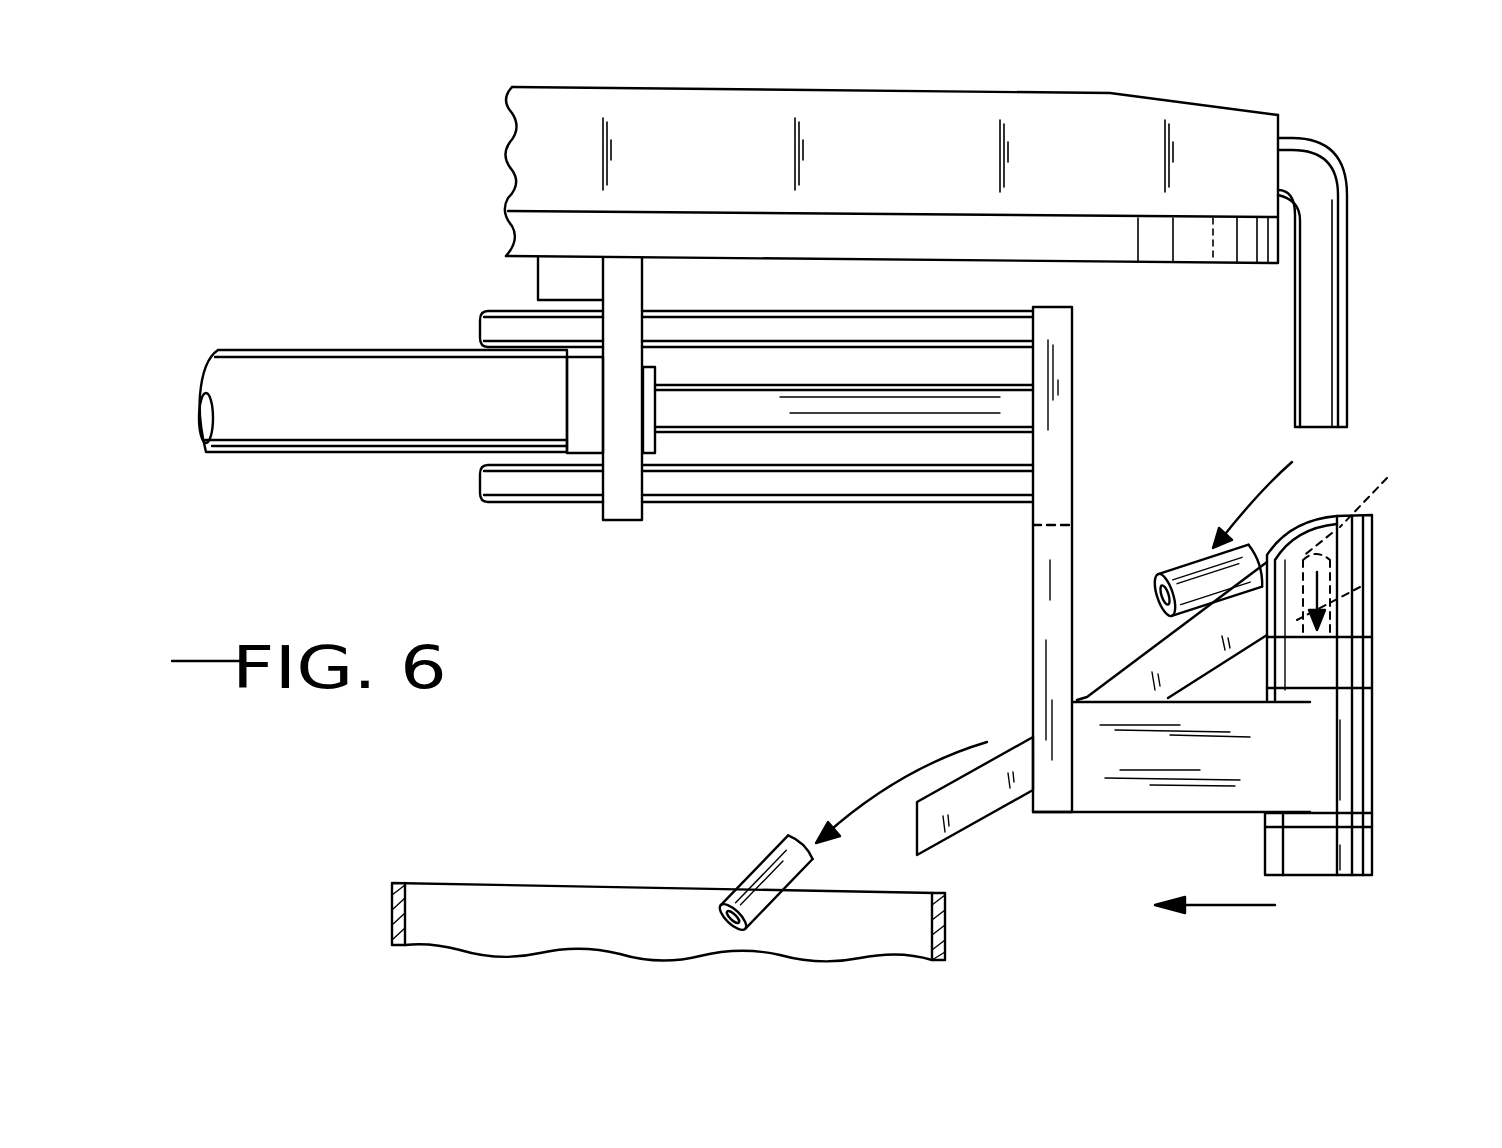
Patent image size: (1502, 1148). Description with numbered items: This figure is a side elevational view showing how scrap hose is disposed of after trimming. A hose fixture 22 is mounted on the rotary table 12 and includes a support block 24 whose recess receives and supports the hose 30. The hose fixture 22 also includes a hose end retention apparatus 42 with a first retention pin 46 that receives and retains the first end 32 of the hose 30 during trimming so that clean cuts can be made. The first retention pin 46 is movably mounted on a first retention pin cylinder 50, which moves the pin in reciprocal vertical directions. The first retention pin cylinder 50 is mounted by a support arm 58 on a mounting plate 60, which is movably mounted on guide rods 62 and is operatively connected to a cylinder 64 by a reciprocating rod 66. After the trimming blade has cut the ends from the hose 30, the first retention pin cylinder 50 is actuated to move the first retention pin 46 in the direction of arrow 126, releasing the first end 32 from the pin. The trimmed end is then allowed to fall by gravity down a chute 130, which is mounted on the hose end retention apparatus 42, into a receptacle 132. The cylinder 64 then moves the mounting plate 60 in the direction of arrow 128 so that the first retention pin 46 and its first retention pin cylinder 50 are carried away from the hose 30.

The rotary table 12 is at (1128, 264).
The hose fixture 22 is at (512, 88).
The support block 24 is at (1282, 112).
The hose 30 is at (1296, 420).
The first end 32 is at (1182, 575).
The hose end retention apparatus 42 is at (1364, 659).
The first retention pin 46 is at (1360, 539).
The first retention pin cylinder 50 is at (1372, 652).
The support arm 58 is at (1140, 812).
The mounting plate 60 is at (1075, 530).
The guide rod 62 is at (855, 333).
The cylinder 64 is at (275, 430).
The reciprocating rod 66 is at (672, 380).
The arrow 126 is at (1320, 583).
The arrow 128 is at (1240, 905).
The chute 130 is at (958, 828).
The receptacle 132 is at (385, 905).